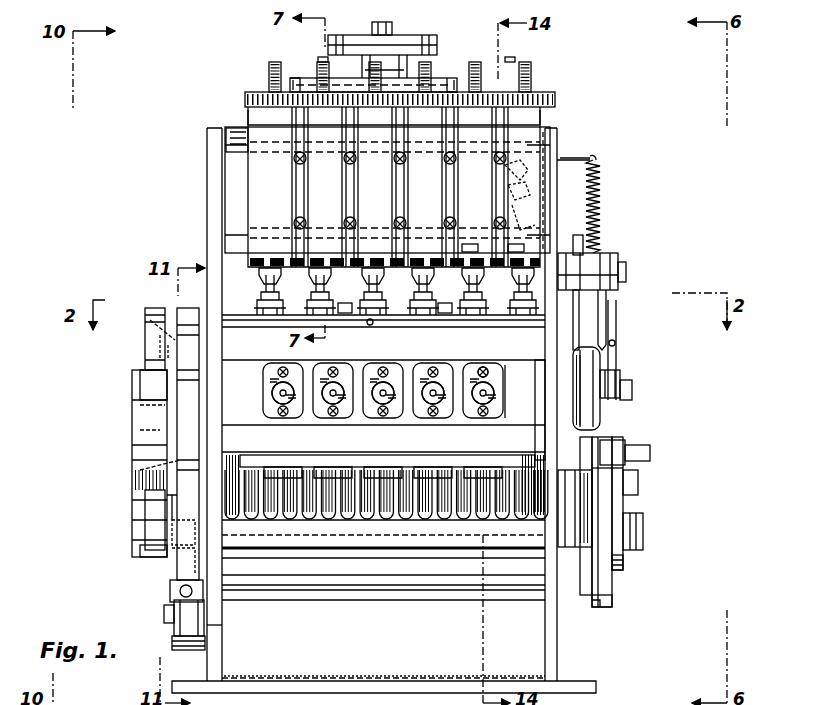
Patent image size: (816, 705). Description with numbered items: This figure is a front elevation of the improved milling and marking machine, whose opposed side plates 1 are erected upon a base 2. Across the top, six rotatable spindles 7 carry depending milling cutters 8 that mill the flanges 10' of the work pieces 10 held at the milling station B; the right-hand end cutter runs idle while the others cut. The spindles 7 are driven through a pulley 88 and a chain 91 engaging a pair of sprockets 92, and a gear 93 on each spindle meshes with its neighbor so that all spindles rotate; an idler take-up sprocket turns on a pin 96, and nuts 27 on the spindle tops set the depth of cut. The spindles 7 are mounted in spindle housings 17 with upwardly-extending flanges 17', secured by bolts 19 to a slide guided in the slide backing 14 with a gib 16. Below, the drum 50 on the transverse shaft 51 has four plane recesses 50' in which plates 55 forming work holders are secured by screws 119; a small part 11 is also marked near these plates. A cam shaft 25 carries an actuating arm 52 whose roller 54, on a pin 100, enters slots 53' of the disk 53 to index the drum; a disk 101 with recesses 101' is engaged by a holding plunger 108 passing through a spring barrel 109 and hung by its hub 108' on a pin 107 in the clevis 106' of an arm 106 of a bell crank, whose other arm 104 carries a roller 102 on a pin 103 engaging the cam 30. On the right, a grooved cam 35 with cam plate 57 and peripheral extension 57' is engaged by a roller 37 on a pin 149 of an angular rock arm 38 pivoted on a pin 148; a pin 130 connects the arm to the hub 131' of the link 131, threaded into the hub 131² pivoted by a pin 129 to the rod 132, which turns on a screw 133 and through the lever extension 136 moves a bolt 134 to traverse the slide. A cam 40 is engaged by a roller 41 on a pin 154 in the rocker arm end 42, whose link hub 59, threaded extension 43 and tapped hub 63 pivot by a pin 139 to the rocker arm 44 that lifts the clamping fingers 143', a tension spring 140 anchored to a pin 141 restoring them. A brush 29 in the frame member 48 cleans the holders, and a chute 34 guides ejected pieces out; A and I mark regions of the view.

The side plates 1 is at (222, 665).
The base 2 is at (368, 690).
The rotatable spindles 7 is at (270, 65).
The milling cutters 8 is at (262, 305).
The work pieces 10 is at (385, 383).
The flange 10' is at (383, 381).
The pin 11 is at (371, 335).
The slide backing 14 is at (222, 190).
The gib 16 is at (222, 150).
The spindle housings 17 is at (403, 187).
The upwardly-extending flanges 17' is at (403, 103).
The bolts 19 is at (396, 160).
The cam shaft 25 is at (643, 530).
The nuts 27 is at (320, 60).
The flexible brush 29 is at (310, 540).
The cam 30 is at (172, 560).
The guard or chute 34 is at (383, 603).
The cam 35 is at (598, 607).
The roller 37 is at (545, 540).
The angular rock arm 38 is at (545, 440).
The cam 40 is at (623, 565).
The roller 41 is at (625, 500).
The end portion of rocker arm 42 is at (650, 455).
The threaded extension 43 is at (616, 330).
The rocker arm 44 is at (618, 260).
The frame member 48 is at (435, 545).
The drum 50 is at (383, 337).
The recesses 50' is at (383, 444).
The transverse shaft 51 is at (632, 385).
The actuating arm 52 is at (145, 500).
The disk 53 is at (132, 323).
The slots 53' is at (120, 381).
The roller 54 is at (145, 375).
The plates 55 is at (387, 406).
The cam plate 57 is at (624, 606).
The peripheral extension 57' is at (619, 514).
The socketed hub 59 is at (600, 360).
The tapped hub 63 is at (618, 300).
The pulley 88 is at (405, 40).
The chain 91 is at (440, 80).
The sprockets 92 is at (295, 78).
The gears 93 is at (250, 95).
The pin 96 is at (390, 70).
The pin 100 is at (132, 378).
The disk 101 is at (177, 431).
The peripheral recesses 101' is at (115, 394).
The roller 102 is at (140, 551).
The pin 103 is at (172, 530).
The arm 104 is at (226, 560).
The arm 106 is at (235, 631).
The clevis end portion 106' is at (155, 593).
The pin 107 is at (164, 614).
The holding plunger 108 is at (320, 539).
The socketed hub portion 108' is at (165, 641).
The spring barrel 109 is at (170, 500).
The screws 119 is at (490, 372).
The pin 129 is at (585, 240).
The pin 130 is at (522, 391).
The link 131 is at (634, 340).
The socketed hub 131' is at (643, 384).
The rod 132 is at (516, 243).
The screw 133 is at (469, 243).
The bolt 134 is at (552, 130).
The lever extension 136 is at (505, 170).
The pin 139 is at (626, 270).
The tension spring 140 is at (605, 195).
The pin 141 is at (600, 160).
The clamping finger portions 143' is at (402, 318).
The pin 148 is at (650, 450).
The pin 149 is at (625, 468).
The pin 154 is at (638, 485).
The section A is at (235, 394).
The milling station B is at (398, 294).
The springs I is at (386, 494).